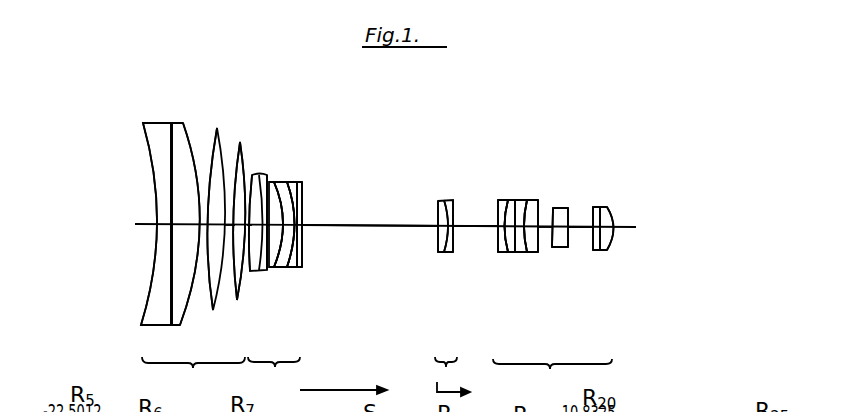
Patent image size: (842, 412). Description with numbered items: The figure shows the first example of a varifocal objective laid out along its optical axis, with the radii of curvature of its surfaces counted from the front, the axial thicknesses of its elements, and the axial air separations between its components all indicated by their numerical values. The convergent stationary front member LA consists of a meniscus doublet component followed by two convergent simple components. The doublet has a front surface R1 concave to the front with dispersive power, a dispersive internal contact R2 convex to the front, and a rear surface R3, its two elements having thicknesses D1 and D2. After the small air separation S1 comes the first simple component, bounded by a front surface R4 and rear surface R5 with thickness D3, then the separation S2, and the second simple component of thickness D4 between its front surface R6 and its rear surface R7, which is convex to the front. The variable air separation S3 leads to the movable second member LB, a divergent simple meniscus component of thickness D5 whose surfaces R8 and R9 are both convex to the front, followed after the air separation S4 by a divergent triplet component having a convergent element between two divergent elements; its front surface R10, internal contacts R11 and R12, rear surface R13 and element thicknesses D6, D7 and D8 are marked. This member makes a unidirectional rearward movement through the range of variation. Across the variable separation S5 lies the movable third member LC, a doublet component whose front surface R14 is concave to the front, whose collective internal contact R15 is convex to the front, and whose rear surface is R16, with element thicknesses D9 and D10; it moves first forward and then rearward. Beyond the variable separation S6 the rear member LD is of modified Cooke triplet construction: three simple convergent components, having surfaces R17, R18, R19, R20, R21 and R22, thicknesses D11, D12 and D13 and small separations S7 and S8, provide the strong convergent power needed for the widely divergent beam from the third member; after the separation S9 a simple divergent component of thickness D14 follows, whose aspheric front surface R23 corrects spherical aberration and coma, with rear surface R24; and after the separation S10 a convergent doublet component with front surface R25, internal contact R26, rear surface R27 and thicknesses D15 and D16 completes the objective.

The front surface of the doublet component R1 is at (157, 210).
The internal contact of the doublet component R2 is at (168, 190).
The rear surface of the doublet component R3 is at (172, 163).
The front surface of the first simple component R4 is at (190, 130).
The rear surface of the first simple component R5 is at (216, 135).
The front surface of the second simple component R6 is at (236, 145).
The rear surface of the second simple component R7 is at (250, 178).
The front surface of the simple meniscus component R8 is at (262, 176).
The rear surface of the simple meniscus component R9 is at (271, 180).
The front surface of the triplet component R10 is at (283, 181).
The first internal contact of the triplet component R11 is at (292, 182).
The second internal contact of the triplet component R12 is at (300, 196).
The rear surface of the triplet component R13 is at (302, 212).
The front surface of the third-member doublet component R14 is at (440, 215).
The internal contact of the third-member doublet component R15 is at (450, 200).
The rear surface of the third-member doublet component R16 is at (442, 202).
The front surface of the first rear convergent component R17 is at (492, 203).
The rear surface of the first rear convergent component R18 is at (505, 200).
The front surface of the second rear convergent component R19 is at (511, 200).
The rear surface of the second rear convergent component R20 is at (519, 200).
The front surface of the third rear convergent component R21 is at (522, 200).
The rear surface of the third rear convergent component R22 is at (531, 200).
The front surface of the simple divergent component R23 is at (549, 208).
The rear surface of the simple divergent component R24 is at (592, 207).
The front surface of the rear doublet component R25 is at (616, 222).
The internal contact of the rear doublet component R26 is at (616, 222).
The rear surface of the rear doublet component R27 is at (616, 222).
The axial thickness of the first element D1 is at (163, 226).
The axial thickness of the second element D2 is at (186, 228).
The axial thickness of the third element D3 is at (214, 245).
The axial thickness of the fourth element D4 is at (238, 300).
The axial thickness of the fifth element D5 is at (270, 272).
The axial thickness of the sixth element D6 is at (283, 268).
The axial thickness of the seventh element D7 is at (301, 234).
The axial thickness of the eighth element D8 is at (303, 230).
The axial thickness of the ninth element D9 is at (446, 252).
The axial thickness of the tenth element D10 is at (500, 252).
The axial thickness of the eleventh element D11 is at (515, 252).
The axial thickness of the twelfth element D12 is at (533, 252).
The axial thickness of the thirteenth element D13 is at (540, 252).
The axial thickness of the fourteenth element D14 is at (577, 242).
The axial thickness of the fifteenth element D15 is at (612, 250).
The axial thickness of the sixteenth element D16 is at (620, 232).
The first air separation S1 is at (172, 232).
The second air separation S2 is at (228, 240).
The third air separation S3 is at (262, 273).
The fourth air separation S4 is at (288, 268).
The fifth air separation S5 is at (398, 230).
The sixth air separation S6 is at (462, 230).
The seventh air separation S7 is at (527, 252).
The eighth air separation S8 is at (524, 252).
The ninth air separation S9 is at (560, 250).
The tenth air separation S10 is at (619, 216).
The convergent stationary front member LA is at (193, 376).
The movable second member LB is at (317, 375).
The movable third member LC is at (451, 376).
The rear member LD is at (552, 377).